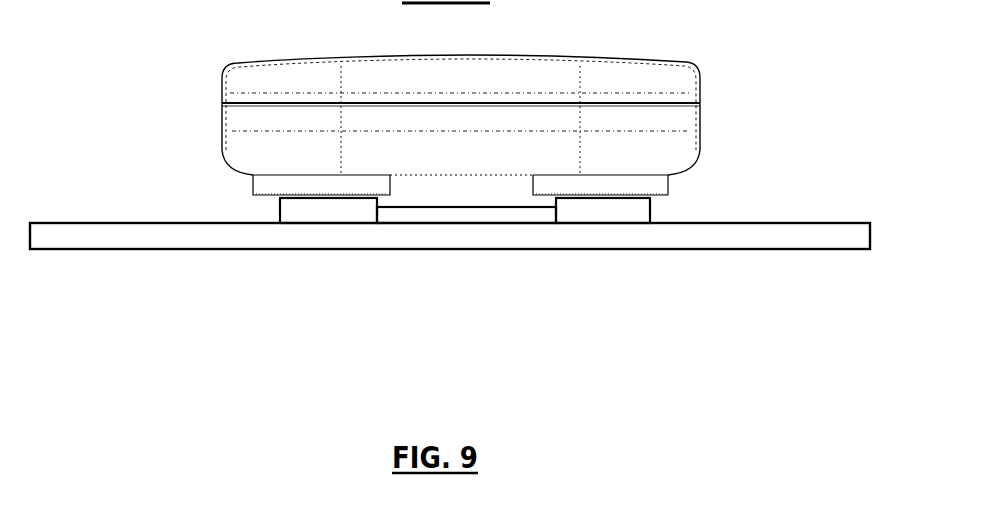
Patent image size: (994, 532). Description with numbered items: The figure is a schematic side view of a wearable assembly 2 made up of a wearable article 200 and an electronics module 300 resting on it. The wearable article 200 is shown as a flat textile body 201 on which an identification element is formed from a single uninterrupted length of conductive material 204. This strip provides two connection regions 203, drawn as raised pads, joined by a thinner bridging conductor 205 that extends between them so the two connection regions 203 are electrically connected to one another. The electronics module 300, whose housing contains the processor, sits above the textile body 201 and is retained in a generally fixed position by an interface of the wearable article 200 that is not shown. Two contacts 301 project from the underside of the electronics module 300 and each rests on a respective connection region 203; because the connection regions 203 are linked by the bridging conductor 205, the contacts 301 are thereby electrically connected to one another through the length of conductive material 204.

The wearable assembly 2 is at (770, 26).
The wearable article 200 is at (724, 266).
The textile body 201 is at (845, 238).
The connection regions 203 is at (315, 212).
The length of conductive material 204 is at (503, 276).
The bridging conductor 205 is at (464, 212).
The electronics module 300 is at (614, 56).
The contacts 301 is at (548, 189).